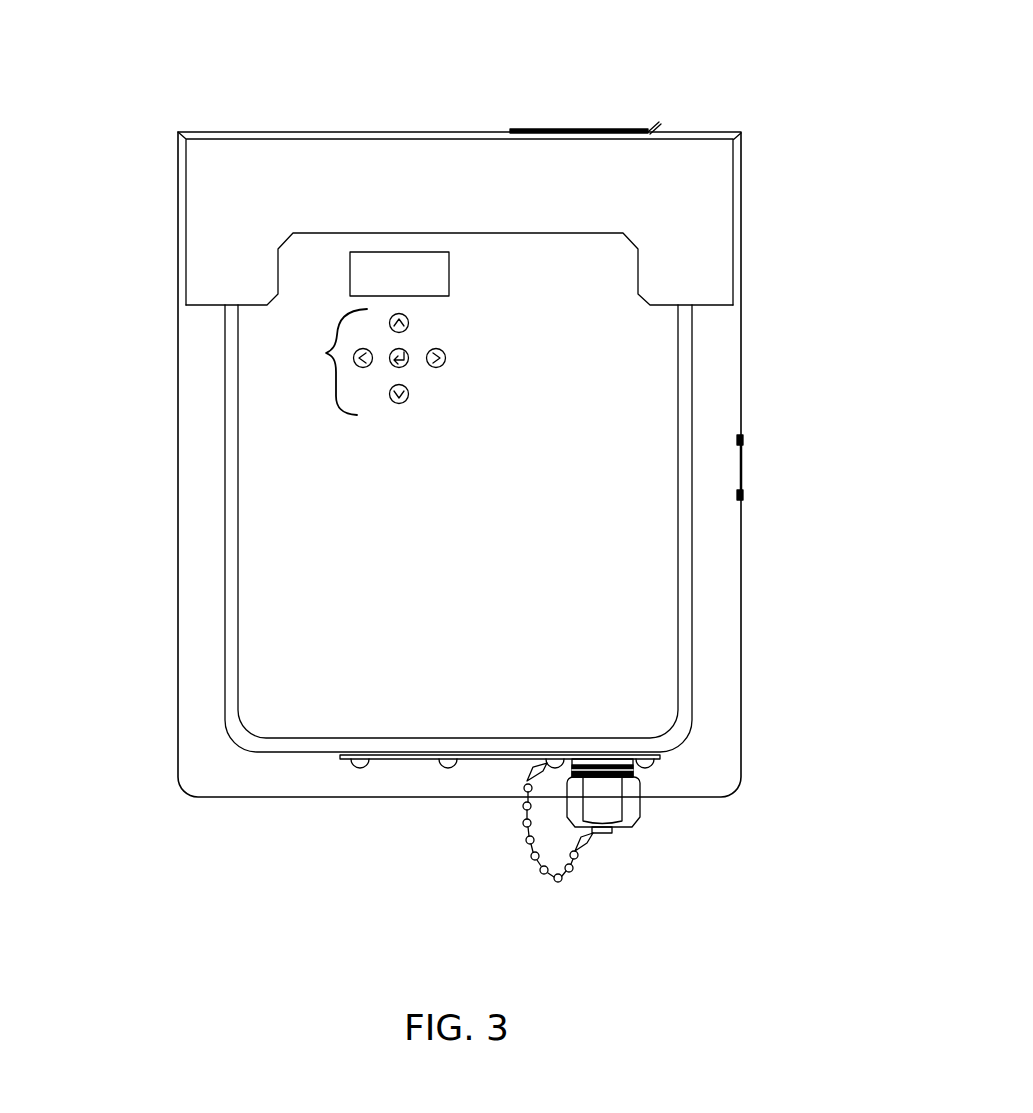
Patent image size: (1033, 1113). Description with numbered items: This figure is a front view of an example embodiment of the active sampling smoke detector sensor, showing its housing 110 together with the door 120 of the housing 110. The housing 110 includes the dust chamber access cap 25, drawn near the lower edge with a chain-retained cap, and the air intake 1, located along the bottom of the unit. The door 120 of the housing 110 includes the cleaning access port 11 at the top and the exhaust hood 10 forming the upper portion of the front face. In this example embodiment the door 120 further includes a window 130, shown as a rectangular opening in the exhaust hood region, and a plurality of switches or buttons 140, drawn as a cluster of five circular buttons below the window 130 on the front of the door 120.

The air intake 1 is at (410, 760).
The exhaust hood 10 is at (698, 199).
The cleaning access port 11 is at (590, 132).
The dust chamber access cap 25 is at (640, 813).
The housing 110 is at (738, 592).
The door 120 is at (179, 488).
The window 130 is at (362, 253).
The buttons 140 is at (326, 353).